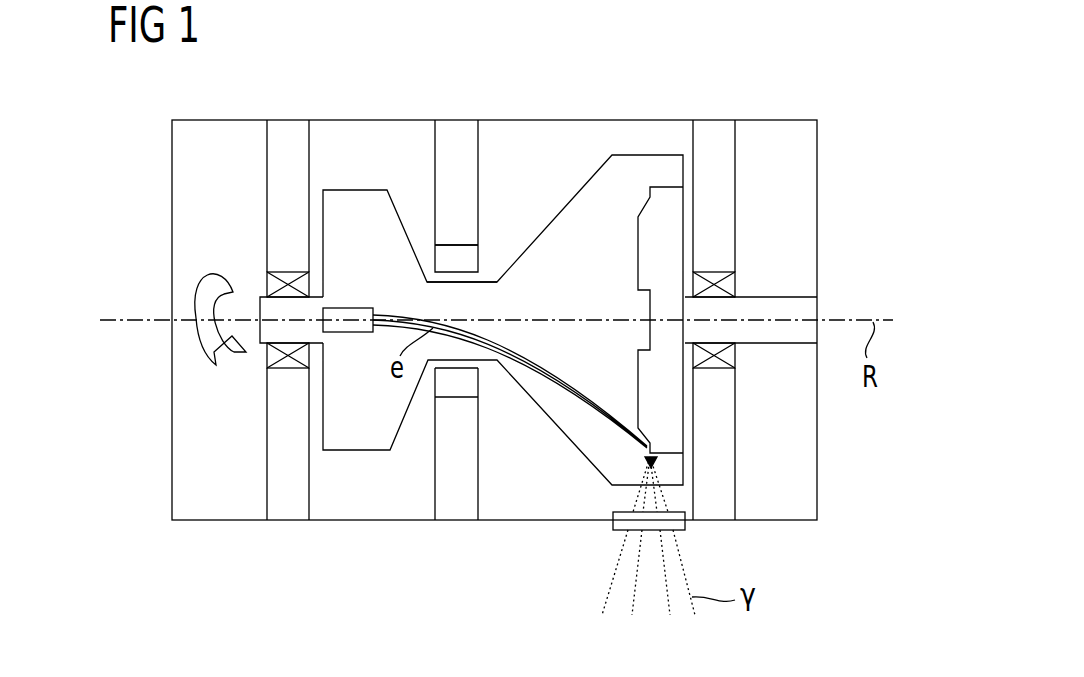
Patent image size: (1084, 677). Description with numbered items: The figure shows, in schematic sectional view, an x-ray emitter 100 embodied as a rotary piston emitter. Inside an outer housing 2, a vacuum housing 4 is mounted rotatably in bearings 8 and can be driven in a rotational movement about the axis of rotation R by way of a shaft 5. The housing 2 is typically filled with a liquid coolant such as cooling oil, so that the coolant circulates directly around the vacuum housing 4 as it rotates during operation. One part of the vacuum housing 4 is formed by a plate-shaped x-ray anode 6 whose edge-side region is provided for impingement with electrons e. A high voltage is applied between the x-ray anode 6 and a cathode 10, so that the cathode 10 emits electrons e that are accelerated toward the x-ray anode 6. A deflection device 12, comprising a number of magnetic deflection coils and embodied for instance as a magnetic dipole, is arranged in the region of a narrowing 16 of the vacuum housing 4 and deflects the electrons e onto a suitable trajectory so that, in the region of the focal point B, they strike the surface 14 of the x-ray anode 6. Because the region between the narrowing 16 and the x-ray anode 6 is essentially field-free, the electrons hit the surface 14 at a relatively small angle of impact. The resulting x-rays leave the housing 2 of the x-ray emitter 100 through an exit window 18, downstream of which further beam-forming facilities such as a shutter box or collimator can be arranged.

The x-ray emitter 100 is at (762, 68).
The housing 2 is at (602, 118).
The vacuum housing 4 is at (560, 428).
The shaft 5 is at (807, 312).
The x-ray anode 6 is at (673, 400).
The bearings 8 is at (733, 284).
The cathode 10 is at (350, 306).
The deflection device 12 is at (453, 253).
The surface 14 is at (682, 443).
The narrowing 16 is at (498, 255).
The exit window 18 is at (688, 525).